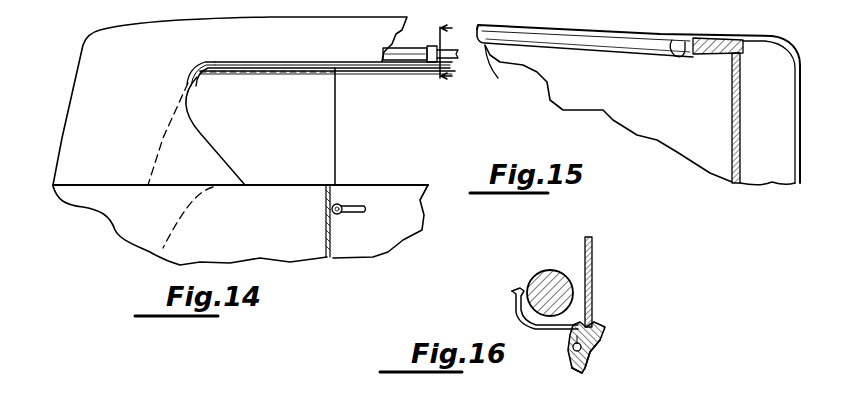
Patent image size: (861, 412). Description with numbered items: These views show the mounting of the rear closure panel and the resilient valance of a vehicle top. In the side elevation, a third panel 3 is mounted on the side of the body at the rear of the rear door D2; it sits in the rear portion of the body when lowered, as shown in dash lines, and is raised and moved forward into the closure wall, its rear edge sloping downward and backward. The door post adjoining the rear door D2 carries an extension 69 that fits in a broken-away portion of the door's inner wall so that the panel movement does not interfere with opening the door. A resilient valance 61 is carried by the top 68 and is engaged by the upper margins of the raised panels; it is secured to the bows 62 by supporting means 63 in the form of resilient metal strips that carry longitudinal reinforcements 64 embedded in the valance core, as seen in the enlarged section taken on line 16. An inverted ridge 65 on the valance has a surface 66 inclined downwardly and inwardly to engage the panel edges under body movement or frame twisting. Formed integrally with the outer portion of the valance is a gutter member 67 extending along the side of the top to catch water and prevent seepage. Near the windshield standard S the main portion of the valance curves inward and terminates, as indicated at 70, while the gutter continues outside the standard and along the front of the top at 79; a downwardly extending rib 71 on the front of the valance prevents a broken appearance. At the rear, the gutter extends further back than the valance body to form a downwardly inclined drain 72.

In FIG. 14, the third panel 3 is at (335, 128).
In FIG. 14, the section line 16— 16 is at (457, 49).
In FIG. 14, the resilient valance 61 is at (385, 68).
In FIG. 15, the resilient valance 61 is at (504, 69).
In FIG. 14, the bows 62 is at (405, 50).
In FIG. 16, the bows 62 is at (549, 276).
In FIG. 14, the supporting means 63 is at (434, 52).
In FIG. 16, the supporting means 63 is at (516, 326).
In FIG. 16, the longitudinal reinforcements 64 is at (575, 352).
In FIG. 15, the inverted ridge 65 is at (627, 56).
In FIG. 16, the inverted ridge 65 is at (584, 376).
In FIG. 16, the inclined surface 66 is at (594, 369).
In FIG. 14, the gutter member 67 is at (276, 60).
In FIG. 15, the gutter member 67 is at (545, 27).
In FIG. 16, the gutter member 67 is at (606, 328).
In FIG. 16, the top 68 is at (593, 277).
In FIG. 14, the extension 69 is at (339, 200).
In FIG. 15, the termination of the main portion of the valance 70 is at (677, 56).
In FIG. 15, the downwardly extending rib 71 is at (696, 37).
In FIG. 14, the downwardly inclined drain 72 is at (190, 74).
In FIG. 15, the front gutter portion 79 is at (800, 60).
In FIG. 15, the windshield standard S is at (744, 43).
In FIG. 14, the rear door D2 is at (397, 184).